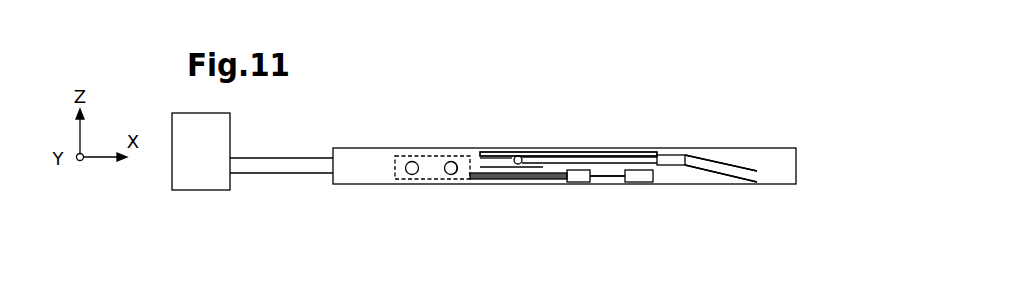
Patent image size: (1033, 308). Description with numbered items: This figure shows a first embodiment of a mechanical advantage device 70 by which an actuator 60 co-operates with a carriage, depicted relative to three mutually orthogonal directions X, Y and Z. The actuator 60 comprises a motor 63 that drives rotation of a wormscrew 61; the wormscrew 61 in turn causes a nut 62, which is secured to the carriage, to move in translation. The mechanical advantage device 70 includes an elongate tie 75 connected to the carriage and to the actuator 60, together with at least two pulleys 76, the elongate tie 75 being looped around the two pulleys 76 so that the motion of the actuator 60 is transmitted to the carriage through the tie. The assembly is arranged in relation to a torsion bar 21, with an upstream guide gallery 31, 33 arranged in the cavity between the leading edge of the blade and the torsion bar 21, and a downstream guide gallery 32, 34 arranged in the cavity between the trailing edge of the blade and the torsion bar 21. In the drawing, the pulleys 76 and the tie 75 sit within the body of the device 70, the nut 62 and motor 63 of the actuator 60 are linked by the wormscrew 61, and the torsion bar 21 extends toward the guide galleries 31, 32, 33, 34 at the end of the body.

The torsion bar 21 is at (607, 157).
The upstream guide gallery 31 is at (495, 152).
The downstream guide gallery 32 is at (568, 154).
The upstream guide gallery 33 is at (713, 163).
The downstream guide gallery 34 is at (721, 168).
The actuator 60 is at (603, 192).
The wormscrew 61 is at (615, 176).
The nut 62 is at (577, 183).
The motor 63 is at (642, 183).
The mechanical advantage device 70 is at (402, 199).
The elongate tie 75 is at (474, 156).
The pulleys 76 is at (412, 161).